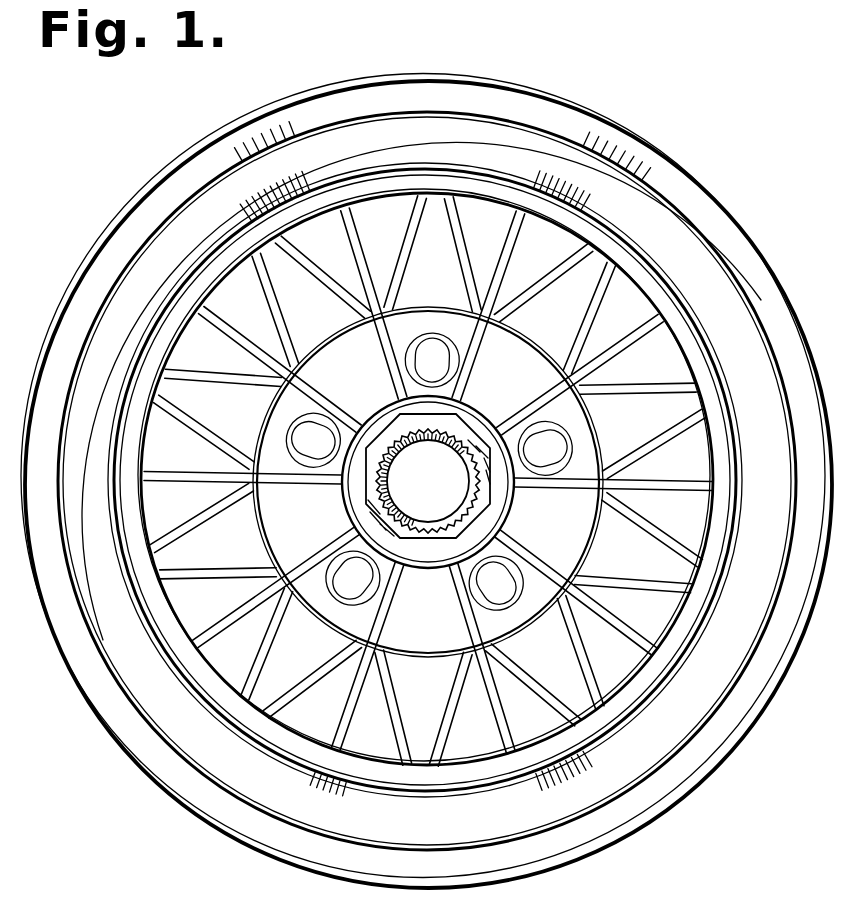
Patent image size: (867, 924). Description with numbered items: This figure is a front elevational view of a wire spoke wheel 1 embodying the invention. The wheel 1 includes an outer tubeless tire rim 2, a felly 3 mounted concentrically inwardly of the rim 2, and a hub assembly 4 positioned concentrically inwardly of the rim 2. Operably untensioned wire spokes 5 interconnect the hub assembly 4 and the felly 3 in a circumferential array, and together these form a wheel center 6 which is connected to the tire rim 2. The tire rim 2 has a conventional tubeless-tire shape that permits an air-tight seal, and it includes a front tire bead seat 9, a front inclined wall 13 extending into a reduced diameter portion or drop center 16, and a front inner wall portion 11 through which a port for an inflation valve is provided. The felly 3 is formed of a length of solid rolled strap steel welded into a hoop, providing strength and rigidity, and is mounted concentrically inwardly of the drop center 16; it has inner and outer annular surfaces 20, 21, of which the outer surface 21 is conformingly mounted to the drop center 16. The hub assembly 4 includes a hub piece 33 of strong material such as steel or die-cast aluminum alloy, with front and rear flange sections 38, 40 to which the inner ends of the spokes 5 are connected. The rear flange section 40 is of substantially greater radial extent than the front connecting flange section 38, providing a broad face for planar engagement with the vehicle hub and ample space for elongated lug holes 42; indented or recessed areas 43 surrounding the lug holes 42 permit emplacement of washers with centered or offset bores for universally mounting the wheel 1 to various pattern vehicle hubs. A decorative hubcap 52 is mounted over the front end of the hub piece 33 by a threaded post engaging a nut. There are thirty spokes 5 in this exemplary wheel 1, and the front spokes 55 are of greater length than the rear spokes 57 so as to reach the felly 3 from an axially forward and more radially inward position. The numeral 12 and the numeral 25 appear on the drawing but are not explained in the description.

The wire spoke wheel 1 is at (632, 111).
The outer tubeless tire rim 2 is at (702, 204).
The felly 3 is at (680, 326).
The hub assembly 4 is at (576, 436).
The wire spokes 5 is at (480, 280).
The wheel center 6 is at (584, 226).
The front tire bead seat 9 is at (720, 766).
The front inner wall portion 11 is at (392, 846).
The spoke 12 is at (330, 313).
The front inclined wall 13 is at (204, 762).
The drop center 16 is at (652, 652).
The inner annular surface 20 is at (706, 468).
The outer annular surface 21 is at (728, 428).
The spoke ring inner edge 25 is at (176, 326).
The hub piece 33 is at (262, 530).
The front flange section 38 is at (480, 412).
The rear flange section 40 is at (588, 548).
The elongated lug holes 42 is at (306, 448).
The recessed areas 43 is at (362, 592).
The decorative hubcap 52 is at (430, 540).
The front spokes 55 is at (368, 240).
The rear spokes 57 is at (172, 416).